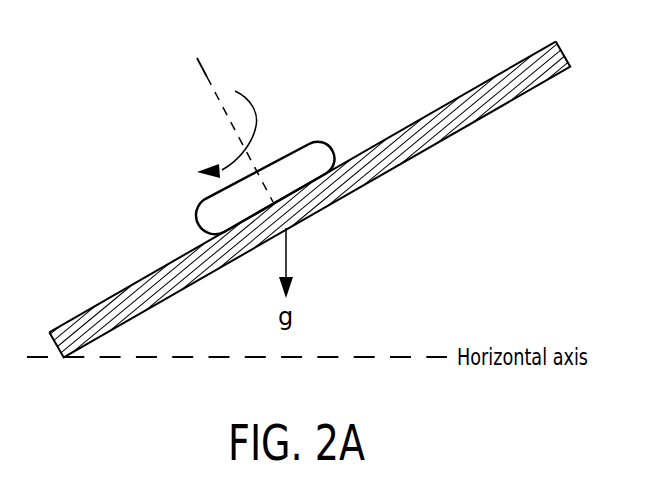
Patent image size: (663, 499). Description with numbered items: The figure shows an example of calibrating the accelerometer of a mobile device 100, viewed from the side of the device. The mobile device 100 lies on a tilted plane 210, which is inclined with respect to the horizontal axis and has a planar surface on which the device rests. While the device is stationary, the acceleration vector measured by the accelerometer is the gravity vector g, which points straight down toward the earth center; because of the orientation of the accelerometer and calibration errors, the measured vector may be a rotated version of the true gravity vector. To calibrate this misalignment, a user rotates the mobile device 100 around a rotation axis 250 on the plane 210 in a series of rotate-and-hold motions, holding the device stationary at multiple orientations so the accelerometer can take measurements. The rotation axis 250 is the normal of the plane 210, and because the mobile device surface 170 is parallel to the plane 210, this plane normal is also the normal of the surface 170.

The mobile device 100 is at (448, 104).
The mobile device surface 170 is at (241, 231).
The plane 210 is at (580, 193).
The rotation axis 250 is at (200, 70).